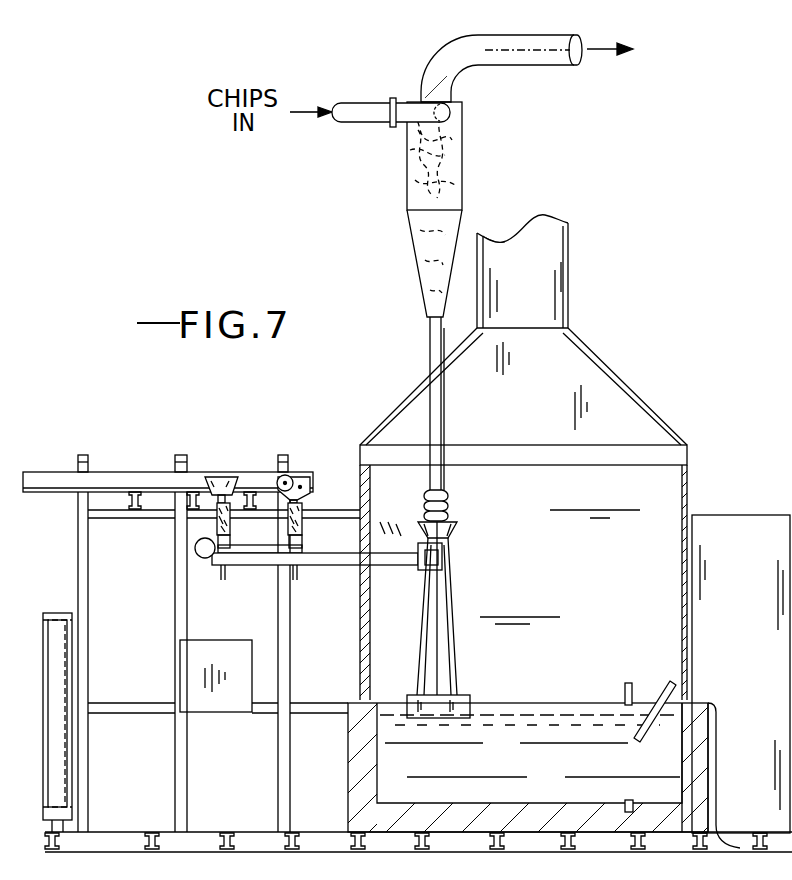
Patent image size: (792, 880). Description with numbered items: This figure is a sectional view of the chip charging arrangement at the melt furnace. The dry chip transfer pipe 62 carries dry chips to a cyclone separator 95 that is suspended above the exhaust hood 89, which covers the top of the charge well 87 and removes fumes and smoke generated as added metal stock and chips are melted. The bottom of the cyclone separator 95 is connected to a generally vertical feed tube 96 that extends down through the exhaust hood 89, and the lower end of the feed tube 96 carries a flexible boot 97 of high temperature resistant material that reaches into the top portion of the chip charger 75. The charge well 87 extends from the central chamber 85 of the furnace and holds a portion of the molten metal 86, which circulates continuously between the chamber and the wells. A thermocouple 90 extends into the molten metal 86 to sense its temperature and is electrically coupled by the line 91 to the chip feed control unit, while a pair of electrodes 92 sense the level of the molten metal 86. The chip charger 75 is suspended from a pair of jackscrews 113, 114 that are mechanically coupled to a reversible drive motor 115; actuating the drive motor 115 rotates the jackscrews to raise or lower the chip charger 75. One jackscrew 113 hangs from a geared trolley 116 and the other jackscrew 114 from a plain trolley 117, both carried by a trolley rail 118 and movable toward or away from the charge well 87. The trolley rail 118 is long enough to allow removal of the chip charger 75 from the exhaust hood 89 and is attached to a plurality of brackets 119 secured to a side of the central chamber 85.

The dry chip transfer pipe 62 is at (370, 103).
The cyclone separator 95 is at (457, 162).
The exhaust hood 89 is at (633, 388).
The feed tube 96 is at (445, 405).
The flexible boot 97 is at (448, 502).
The chip charger 75 is at (455, 609).
The electrodes 92 is at (626, 684).
The central chamber 85 is at (760, 617).
The charge well 87 is at (700, 730).
The molten metal 86 is at (528, 767).
The thermocouple 90 is at (640, 738).
The line 91 is at (748, 760).
The jackscrew 113 is at (303, 528).
The jackscrew 114 is at (230, 528).
The reversible drive motor 115 is at (200, 563).
The geared trolley 116 is at (303, 475).
The plain trolley 117 is at (213, 475).
The trolley rail 118 is at (127, 472).
The brackets 119 is at (83, 455).